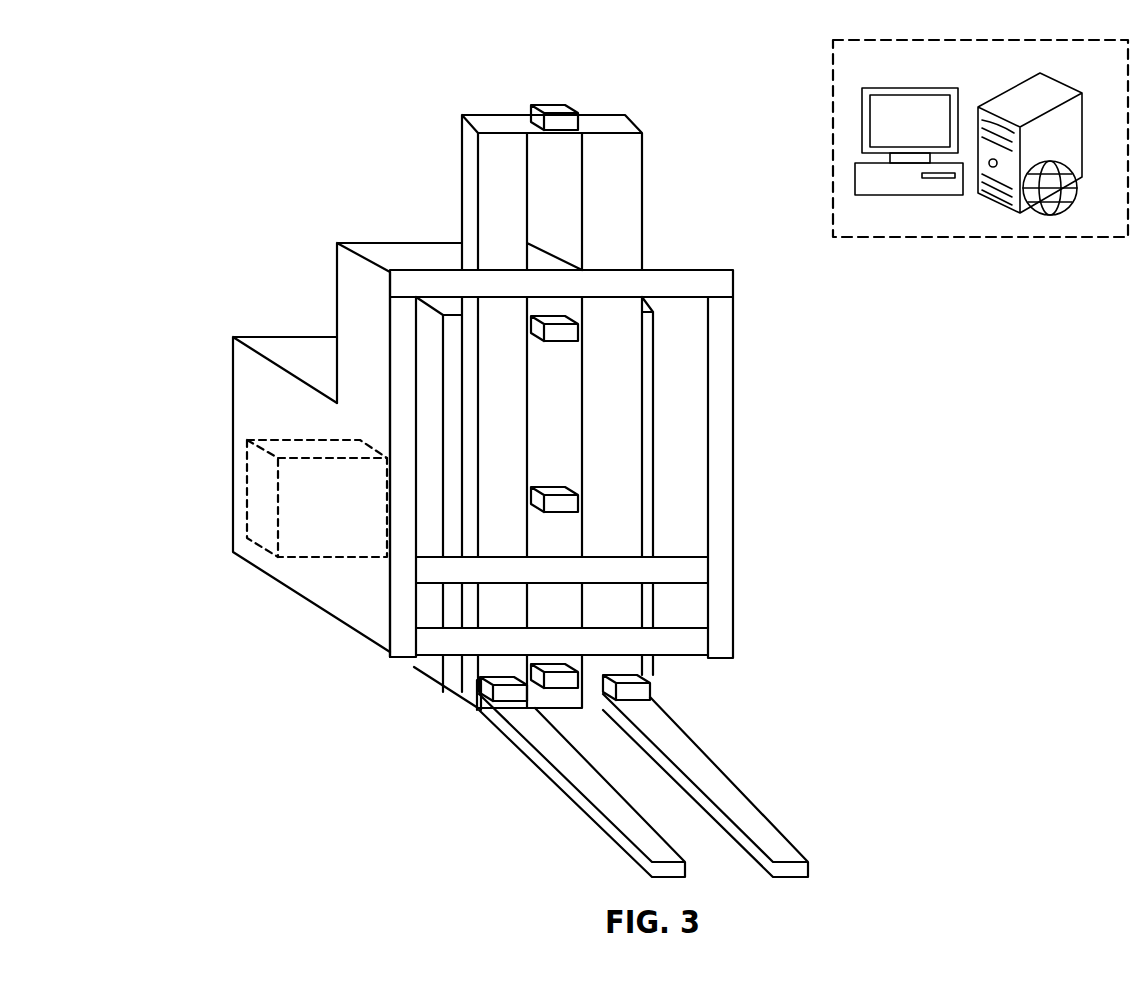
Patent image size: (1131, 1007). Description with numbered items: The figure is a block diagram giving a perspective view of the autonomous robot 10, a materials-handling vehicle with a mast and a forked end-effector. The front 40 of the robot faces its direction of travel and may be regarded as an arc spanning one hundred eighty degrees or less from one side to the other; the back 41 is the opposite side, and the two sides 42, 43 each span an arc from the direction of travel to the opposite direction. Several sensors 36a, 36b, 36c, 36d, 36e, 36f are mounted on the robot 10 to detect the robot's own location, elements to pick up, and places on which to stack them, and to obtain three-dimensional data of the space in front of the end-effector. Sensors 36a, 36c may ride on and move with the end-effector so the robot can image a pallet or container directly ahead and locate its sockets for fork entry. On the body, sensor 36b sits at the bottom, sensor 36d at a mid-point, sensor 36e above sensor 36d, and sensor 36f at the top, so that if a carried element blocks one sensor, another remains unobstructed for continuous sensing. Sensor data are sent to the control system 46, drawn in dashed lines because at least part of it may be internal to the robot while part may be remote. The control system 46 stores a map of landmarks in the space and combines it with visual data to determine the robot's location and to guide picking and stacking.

The robot 10 is at (282, 192).
The back of the robot 41 is at (233, 510).
The side of the robot 42 is at (375, 374).
The side of the robot 43 is at (653, 433).
The front of the robot 40 is at (565, 419).
The sensor 36a is at (478, 692).
The sensor 36b is at (544, 688).
The sensor 36c is at (652, 693).
The sensor 36d is at (579, 505).
The sensor 36e is at (579, 330).
The sensor 36f is at (580, 122).
The control system 46 is at (297, 558).